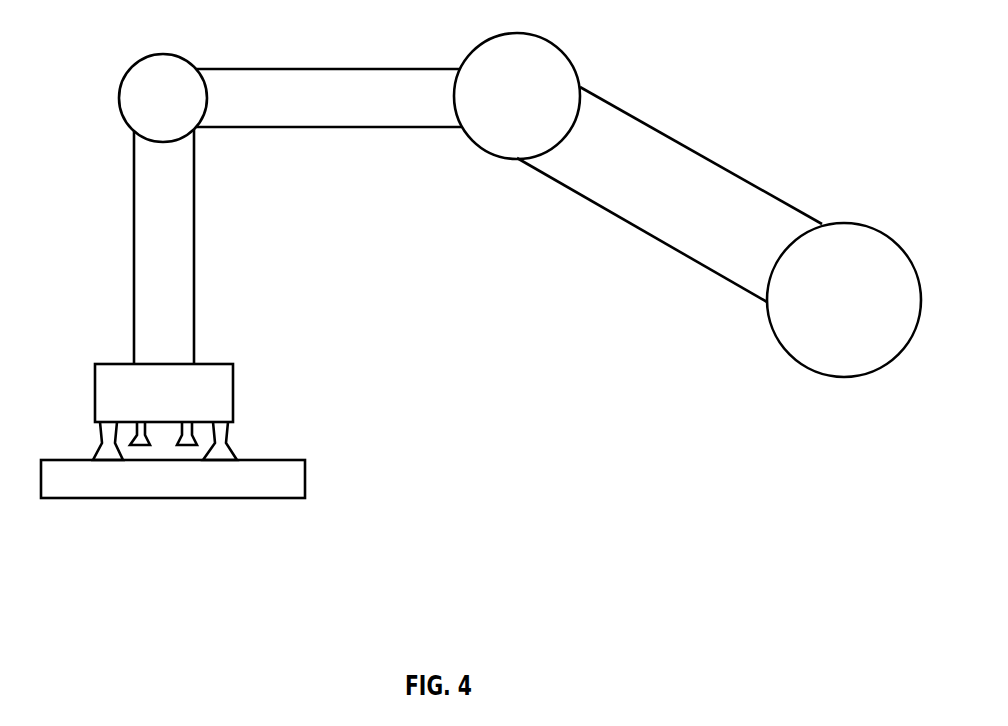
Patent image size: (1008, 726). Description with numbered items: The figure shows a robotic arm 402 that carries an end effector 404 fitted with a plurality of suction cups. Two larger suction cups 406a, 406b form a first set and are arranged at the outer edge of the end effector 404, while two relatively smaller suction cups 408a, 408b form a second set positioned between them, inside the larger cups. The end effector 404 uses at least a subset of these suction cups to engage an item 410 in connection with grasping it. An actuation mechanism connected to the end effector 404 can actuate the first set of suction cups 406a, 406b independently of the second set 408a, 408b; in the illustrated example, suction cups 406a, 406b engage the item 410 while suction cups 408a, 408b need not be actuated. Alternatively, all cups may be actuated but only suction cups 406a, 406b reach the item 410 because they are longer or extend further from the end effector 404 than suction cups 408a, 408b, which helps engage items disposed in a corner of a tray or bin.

The robotic arm 402 is at (718, 163).
The end effector 404 is at (235, 364).
The suction cup 406a is at (100, 442).
The suction cup 406b is at (230, 440).
The suction cup 408a is at (132, 438).
The suction cup 408b is at (192, 440).
The item 410 is at (306, 478).